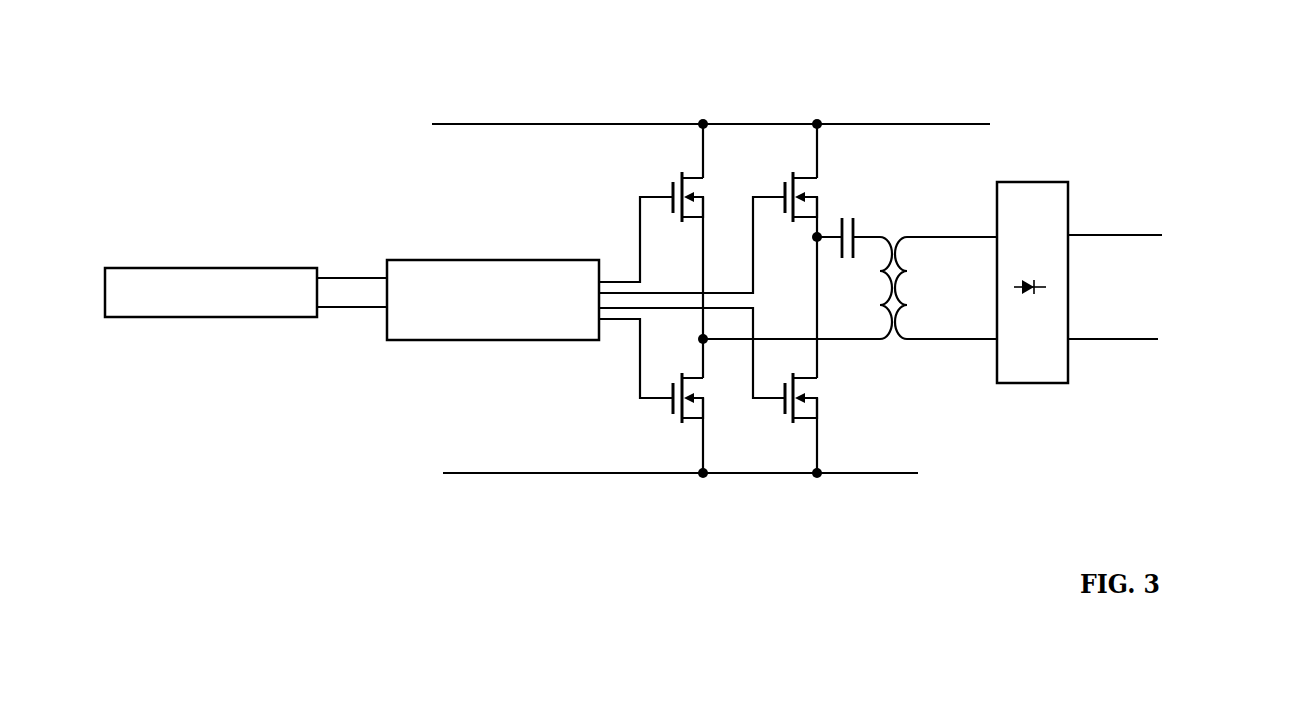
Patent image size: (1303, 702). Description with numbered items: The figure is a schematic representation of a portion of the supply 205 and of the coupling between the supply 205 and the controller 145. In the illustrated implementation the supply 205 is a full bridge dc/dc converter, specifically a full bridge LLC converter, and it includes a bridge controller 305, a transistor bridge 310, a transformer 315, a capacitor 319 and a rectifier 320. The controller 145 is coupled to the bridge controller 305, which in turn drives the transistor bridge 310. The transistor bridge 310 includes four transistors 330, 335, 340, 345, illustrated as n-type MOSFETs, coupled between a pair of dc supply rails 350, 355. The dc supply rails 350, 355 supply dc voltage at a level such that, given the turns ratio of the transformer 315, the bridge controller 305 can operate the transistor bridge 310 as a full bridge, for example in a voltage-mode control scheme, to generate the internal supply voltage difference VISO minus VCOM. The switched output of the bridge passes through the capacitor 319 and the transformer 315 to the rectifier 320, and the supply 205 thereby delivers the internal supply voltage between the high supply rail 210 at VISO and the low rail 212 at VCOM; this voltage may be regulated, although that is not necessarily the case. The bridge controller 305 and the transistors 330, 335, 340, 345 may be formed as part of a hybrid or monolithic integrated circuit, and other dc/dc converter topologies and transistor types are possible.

The controller 145 is at (218, 267).
The supply 205 is at (1141, 74).
The high supply rail 210 is at (1123, 220).
The low rail 212 is at (1108, 347).
The bridge controller 305 is at (488, 258).
The transistor bridge 310 is at (668, 104).
The transformer 315 is at (901, 364).
The capacitor 319 is at (858, 203).
The rectifier 320 is at (1037, 178).
The transistor 330 is at (672, 183).
The transistor 335 is at (783, 184).
The transistor 340 is at (676, 415).
The transistor 345 is at (786, 415).
The dc supply rail 350 is at (503, 122).
The dc supply rail 355 is at (527, 478).